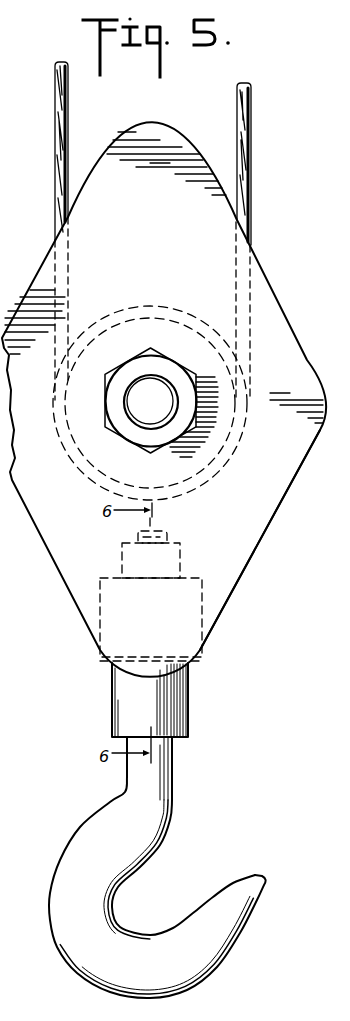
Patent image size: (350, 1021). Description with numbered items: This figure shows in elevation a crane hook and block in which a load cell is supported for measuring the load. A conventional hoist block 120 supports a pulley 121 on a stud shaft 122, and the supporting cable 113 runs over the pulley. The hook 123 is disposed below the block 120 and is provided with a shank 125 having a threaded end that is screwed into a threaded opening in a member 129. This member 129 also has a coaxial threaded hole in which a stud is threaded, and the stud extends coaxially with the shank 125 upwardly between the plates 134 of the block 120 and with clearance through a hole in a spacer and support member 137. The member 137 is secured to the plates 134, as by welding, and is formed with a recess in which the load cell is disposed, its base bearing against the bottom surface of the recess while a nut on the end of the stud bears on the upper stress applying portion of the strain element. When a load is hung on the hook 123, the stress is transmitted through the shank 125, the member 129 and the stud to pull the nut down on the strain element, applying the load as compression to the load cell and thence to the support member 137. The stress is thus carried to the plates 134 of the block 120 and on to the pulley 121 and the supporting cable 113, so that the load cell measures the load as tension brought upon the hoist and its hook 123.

The hoisting cable 113 is at (125, 231).
The hoist block 120 is at (266, 548).
The plates 134 is at (277, 493).
The pulley 121 is at (233, 454).
The stud shaft 122 is at (148, 388).
The spacer and support member 137 is at (202, 598).
The member 129 is at (180, 695).
The shank 125 is at (173, 752).
The hook 123 is at (60, 938).